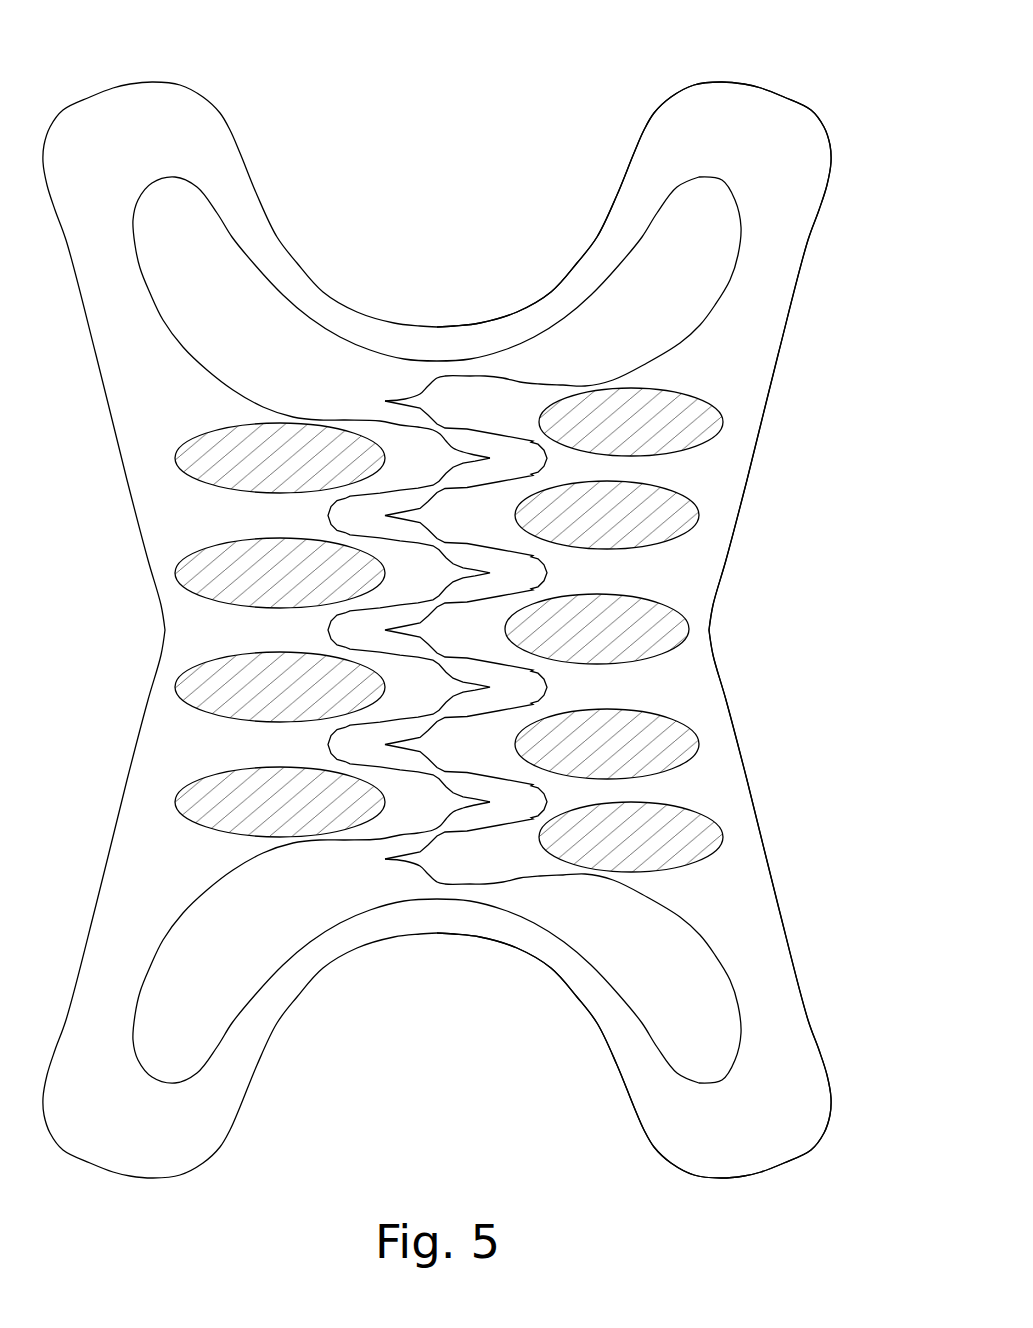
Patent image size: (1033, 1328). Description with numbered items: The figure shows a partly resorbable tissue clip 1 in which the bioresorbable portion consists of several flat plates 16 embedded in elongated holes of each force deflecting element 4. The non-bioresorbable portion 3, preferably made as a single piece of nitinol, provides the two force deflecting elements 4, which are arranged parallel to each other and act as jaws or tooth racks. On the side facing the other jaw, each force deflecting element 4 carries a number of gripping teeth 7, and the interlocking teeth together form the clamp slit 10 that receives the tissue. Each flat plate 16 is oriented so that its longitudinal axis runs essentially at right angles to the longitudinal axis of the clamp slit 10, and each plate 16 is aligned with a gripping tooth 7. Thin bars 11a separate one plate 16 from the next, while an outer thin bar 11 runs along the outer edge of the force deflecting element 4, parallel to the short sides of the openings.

The partly resorbable tissue clip 1 is at (778, 75).
The portion made of non-bioresorbable material 3 is at (698, 600).
The force deflecting element 4 is at (620, 695).
The gripping tooth 7 is at (425, 457).
The clamp slit 10 is at (517, 455).
The outer thin bar 11 is at (300, 420).
The thin bar 11a is at (213, 630).
The flat plate 16 is at (667, 514).